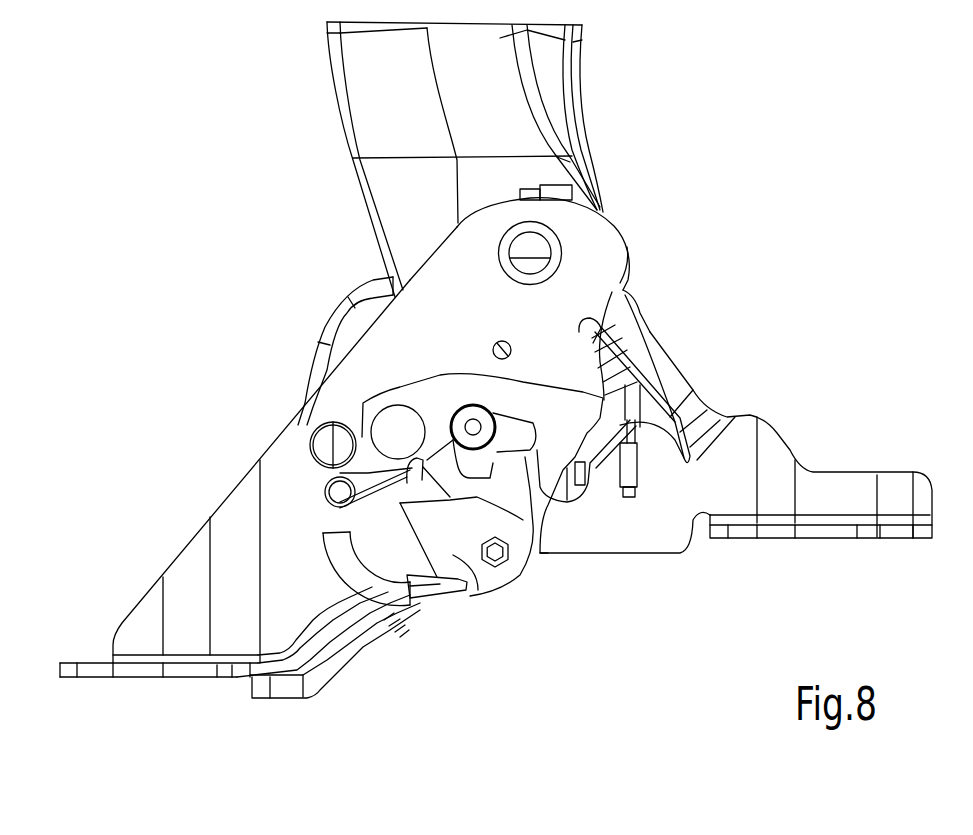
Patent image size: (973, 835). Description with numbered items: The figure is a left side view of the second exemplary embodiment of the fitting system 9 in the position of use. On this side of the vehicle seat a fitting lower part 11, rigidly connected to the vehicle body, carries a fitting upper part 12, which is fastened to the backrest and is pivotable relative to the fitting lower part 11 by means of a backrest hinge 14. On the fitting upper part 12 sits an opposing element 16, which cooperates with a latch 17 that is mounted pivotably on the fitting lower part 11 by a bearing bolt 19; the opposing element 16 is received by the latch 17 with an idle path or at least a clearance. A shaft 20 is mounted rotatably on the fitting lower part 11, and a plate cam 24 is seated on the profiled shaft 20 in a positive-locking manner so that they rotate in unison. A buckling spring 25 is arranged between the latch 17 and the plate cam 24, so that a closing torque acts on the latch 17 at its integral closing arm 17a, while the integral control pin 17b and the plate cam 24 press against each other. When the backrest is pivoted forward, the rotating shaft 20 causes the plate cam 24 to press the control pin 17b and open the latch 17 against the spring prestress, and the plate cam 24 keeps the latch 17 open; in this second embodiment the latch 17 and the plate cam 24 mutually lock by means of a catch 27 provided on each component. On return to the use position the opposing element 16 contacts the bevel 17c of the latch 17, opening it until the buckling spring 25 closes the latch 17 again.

The fitting system 9 is at (795, 217).
The fitting lower part 11 is at (238, 535).
The fitting upper part 12 is at (393, 105).
The backrest hinge 14 is at (527, 252).
The opposing element 16 is at (548, 555).
The latch 17 is at (567, 375).
The closing arm 17a is at (330, 468).
The control pin 17b is at (507, 453).
The bevel 17c is at (587, 497).
The bearing bolt 19 is at (393, 410).
The shaft 20 is at (495, 557).
The plate cam 24 is at (455, 554).
The buckling spring 25 is at (345, 545).
The catch 27 is at (340, 570).